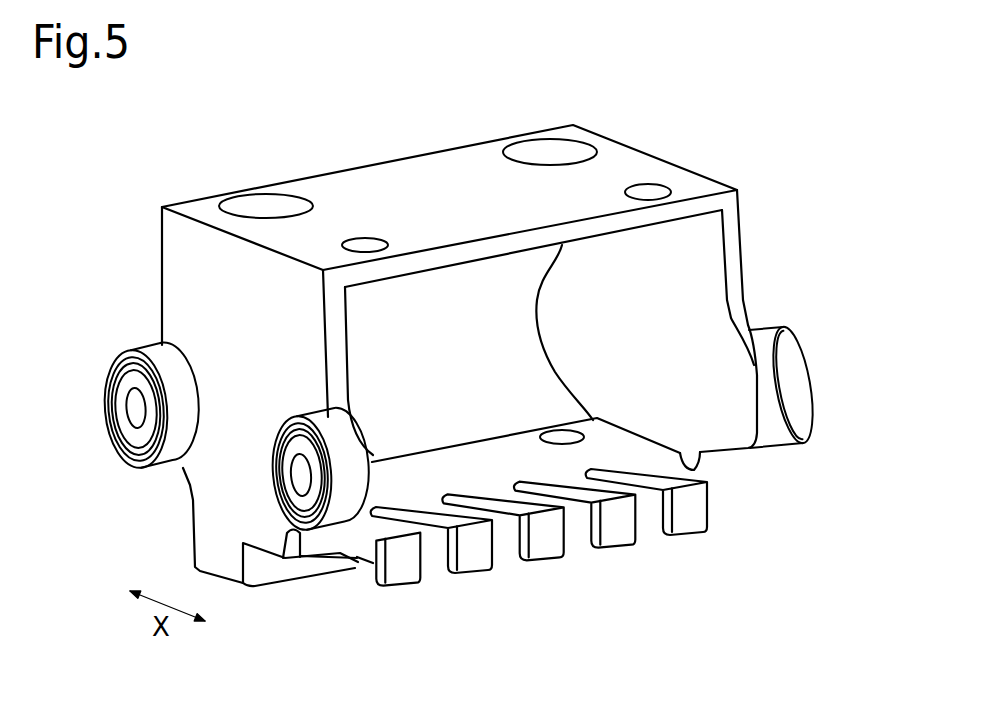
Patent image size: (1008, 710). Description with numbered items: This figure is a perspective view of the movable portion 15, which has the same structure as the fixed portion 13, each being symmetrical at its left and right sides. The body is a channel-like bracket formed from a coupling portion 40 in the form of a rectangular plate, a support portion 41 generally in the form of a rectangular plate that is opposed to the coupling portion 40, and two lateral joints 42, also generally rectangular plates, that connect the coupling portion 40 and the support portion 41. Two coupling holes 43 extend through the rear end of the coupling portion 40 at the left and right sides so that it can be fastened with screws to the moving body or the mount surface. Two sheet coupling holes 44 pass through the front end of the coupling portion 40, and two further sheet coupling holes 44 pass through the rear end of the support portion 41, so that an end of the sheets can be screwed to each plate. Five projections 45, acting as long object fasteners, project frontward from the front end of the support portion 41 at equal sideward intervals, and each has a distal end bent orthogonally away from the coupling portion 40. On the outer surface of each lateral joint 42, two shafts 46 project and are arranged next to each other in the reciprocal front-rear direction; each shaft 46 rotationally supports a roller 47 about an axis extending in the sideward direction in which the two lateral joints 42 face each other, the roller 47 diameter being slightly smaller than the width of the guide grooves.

The fixed portion 13 is at (463, 355).
The movable portion 15 is at (777, 140).
The coupling portion 40 is at (400, 176).
The support portion 41 is at (458, 460).
The lateral joint 42 is at (175, 271).
The coupling hole 43 is at (257, 204).
The sheet coupling hole 44 is at (369, 243).
The projection 45 is at (542, 537).
The shaft 46 is at (138, 410).
The roller 47 is at (177, 364).